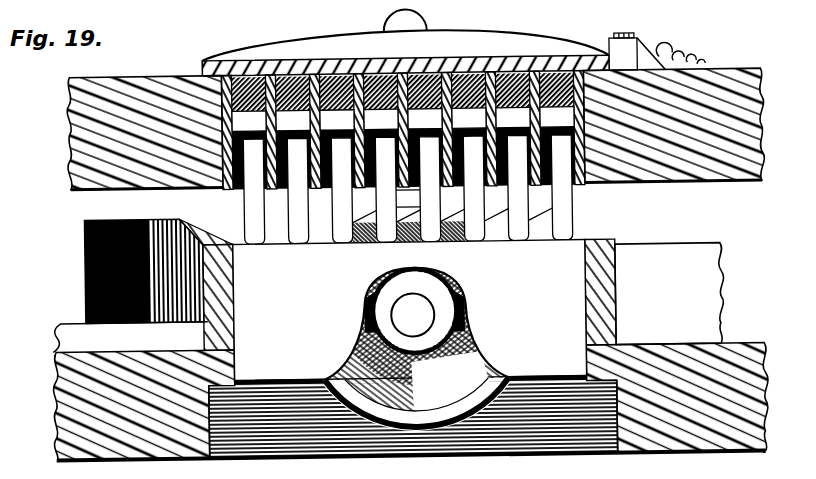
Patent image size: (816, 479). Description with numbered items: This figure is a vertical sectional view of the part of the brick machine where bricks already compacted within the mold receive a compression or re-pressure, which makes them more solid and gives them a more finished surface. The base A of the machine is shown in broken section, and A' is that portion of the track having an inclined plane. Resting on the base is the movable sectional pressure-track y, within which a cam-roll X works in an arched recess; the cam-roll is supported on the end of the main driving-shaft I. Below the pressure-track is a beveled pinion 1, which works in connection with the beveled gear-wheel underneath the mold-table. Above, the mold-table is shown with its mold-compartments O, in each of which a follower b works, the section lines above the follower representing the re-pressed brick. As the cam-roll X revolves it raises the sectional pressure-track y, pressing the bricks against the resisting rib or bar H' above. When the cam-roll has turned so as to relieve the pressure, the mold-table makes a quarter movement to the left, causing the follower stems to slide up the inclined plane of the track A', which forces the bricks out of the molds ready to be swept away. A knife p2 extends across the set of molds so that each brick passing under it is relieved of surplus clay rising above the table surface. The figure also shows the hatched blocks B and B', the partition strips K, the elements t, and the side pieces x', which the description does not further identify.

The base A is at (396, 401).
The track section with inclined plane A' is at (381, 282).
The upper block B is at (400, 133).
The upper block top part B' is at (407, 129).
The resisting rib or bar H' is at (406, 34).
The partition strips K is at (400, 130).
The key blocks t is at (402, 102).
The mold-compartments O is at (407, 190).
The followers b is at (407, 190).
The side strips x' is at (409, 294).
The movable sectional pressure-track y is at (410, 311).
The cam-roll X is at (416, 324).
The end of main driving-shaft I is at (413, 315).
The beveled pinion 1 is at (416, 348).
The knife p2 is at (657, 51).